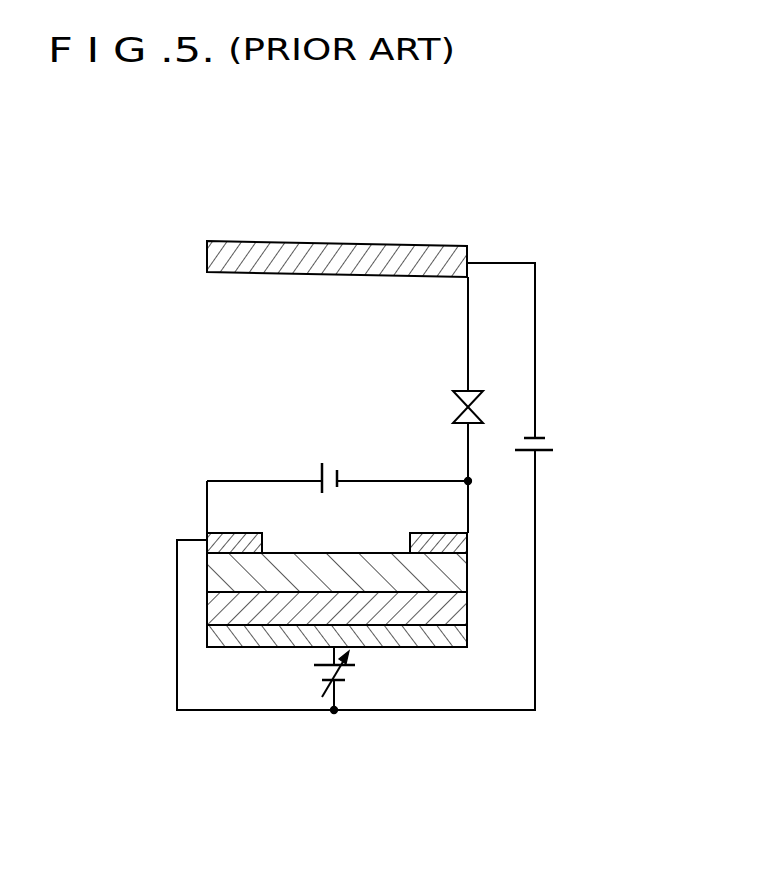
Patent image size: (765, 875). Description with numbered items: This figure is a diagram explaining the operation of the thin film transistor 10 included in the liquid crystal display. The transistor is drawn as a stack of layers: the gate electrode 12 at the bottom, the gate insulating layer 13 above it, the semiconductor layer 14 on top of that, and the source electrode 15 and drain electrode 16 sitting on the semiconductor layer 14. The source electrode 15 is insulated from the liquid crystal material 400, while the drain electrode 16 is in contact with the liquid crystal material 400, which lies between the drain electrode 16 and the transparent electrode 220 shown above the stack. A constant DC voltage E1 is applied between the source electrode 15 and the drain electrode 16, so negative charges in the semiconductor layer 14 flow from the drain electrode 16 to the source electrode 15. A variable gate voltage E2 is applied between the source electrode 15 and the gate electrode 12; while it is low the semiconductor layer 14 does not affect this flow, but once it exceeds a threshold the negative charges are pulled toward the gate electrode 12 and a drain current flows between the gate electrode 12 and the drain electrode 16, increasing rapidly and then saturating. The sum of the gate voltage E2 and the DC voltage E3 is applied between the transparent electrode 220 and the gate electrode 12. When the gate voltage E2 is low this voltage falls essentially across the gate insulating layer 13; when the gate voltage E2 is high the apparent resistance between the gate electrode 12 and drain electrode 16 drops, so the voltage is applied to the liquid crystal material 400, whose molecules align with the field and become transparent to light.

The thin film transistor 10 is at (320, 518).
The gate electrode 12 is at (460, 638).
The gate insulating layer 13 is at (454, 614).
The semiconductor layer 14 is at (452, 584).
The source electrode 15 is at (262, 540).
The drain electrode 16 is at (468, 545).
The transparent electrode 220 is at (451, 248).
The liquid crystal material 400 is at (456, 389).
The constant DC voltage E1 is at (331, 460).
The variable gate voltage E2 is at (350, 678).
The DC voltage E3 is at (552, 449).